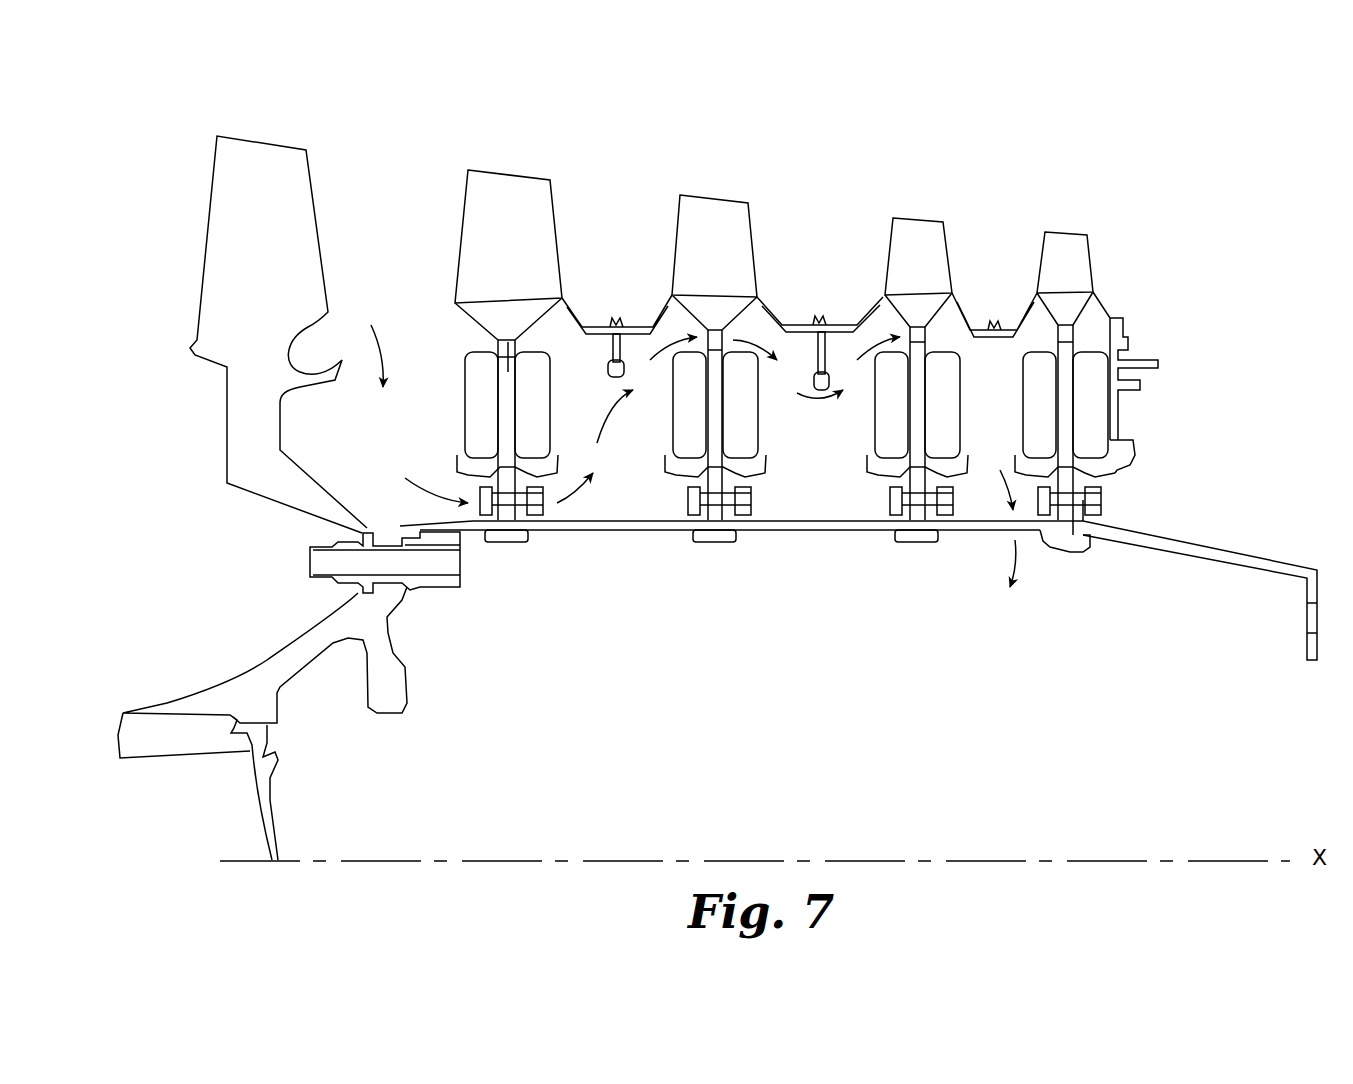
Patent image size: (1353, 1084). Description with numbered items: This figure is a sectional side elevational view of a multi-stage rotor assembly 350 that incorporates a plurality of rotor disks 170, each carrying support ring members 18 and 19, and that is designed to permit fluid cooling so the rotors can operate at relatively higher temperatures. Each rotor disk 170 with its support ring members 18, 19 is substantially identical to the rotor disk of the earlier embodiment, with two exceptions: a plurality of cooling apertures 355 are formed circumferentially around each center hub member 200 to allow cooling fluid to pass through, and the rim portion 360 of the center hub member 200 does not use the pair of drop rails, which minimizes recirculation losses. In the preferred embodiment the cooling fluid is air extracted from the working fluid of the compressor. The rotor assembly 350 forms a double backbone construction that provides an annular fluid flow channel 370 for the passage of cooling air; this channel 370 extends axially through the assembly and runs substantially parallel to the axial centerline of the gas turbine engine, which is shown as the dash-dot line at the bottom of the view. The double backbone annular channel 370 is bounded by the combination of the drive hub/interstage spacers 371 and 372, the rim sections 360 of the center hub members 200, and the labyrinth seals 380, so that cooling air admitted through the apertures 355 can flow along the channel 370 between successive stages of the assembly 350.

The multi-stage rotor assembly 350 is at (1103, 115).
The drive hub/interstage spacer 371 is at (460, 540).
The drive hub/interstage spacer 372 is at (567, 523).
The rim portion 360 is at (557, 297).
The center hub member 200 is at (497, 341).
The labyrinth seal 380 is at (668, 307).
The cooling aperture 355 is at (663, 310).
The support ring member 18 is at (467, 398).
The support ring member 19 is at (552, 387).
The annular fluid flow channel 370 is at (1000, 355).
The rotor disk 170 is at (572, 295).